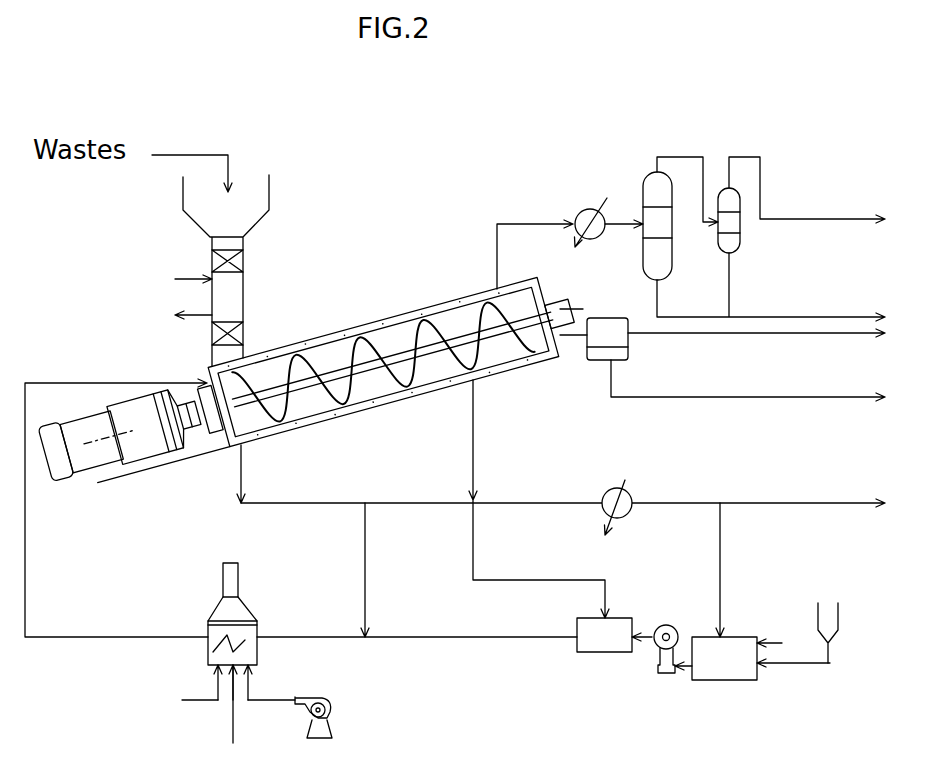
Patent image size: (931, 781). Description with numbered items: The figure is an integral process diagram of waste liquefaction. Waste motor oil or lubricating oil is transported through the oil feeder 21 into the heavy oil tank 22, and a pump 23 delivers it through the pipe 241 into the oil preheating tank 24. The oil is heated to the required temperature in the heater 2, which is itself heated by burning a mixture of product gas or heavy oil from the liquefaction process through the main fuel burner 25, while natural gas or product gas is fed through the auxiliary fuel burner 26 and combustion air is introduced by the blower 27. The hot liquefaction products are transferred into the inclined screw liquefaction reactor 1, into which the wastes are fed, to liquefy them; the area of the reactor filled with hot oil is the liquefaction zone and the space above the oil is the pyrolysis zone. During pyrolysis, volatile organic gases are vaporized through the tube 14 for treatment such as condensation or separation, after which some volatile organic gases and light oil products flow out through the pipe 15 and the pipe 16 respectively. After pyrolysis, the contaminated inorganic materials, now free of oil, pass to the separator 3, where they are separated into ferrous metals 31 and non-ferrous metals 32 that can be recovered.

The inclined screw liquefaction reactor 1 is at (358, 290).
The heater 2 is at (220, 607).
The separator 3 is at (620, 340).
The tube 14 is at (497, 253).
The pipe 15 is at (760, 182).
The pipe 16 is at (752, 317).
The oil feeder 21 is at (828, 612).
The heavy oil tank 22 is at (725, 673).
The pump 23 is at (665, 673).
The oil preheating tank 24 is at (598, 652).
The pipe 241 is at (428, 637).
The main fuel burner 25 is at (182, 700).
The auxiliary fuel burner 26 is at (234, 735).
The blower 27 is at (334, 712).
The ferrous metals 31 is at (740, 333).
The non-ferrous metals 32 is at (733, 397).